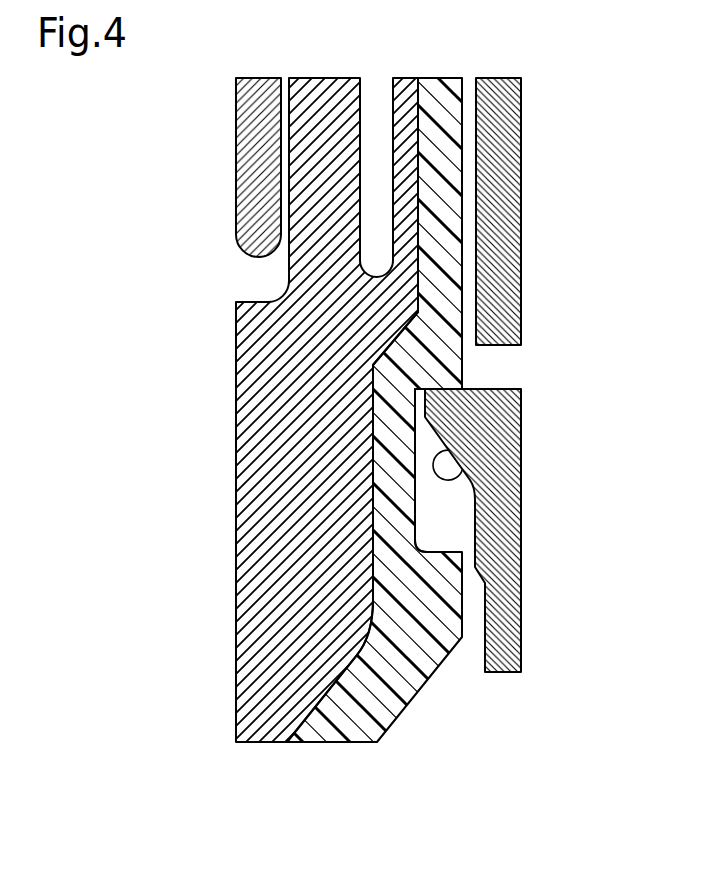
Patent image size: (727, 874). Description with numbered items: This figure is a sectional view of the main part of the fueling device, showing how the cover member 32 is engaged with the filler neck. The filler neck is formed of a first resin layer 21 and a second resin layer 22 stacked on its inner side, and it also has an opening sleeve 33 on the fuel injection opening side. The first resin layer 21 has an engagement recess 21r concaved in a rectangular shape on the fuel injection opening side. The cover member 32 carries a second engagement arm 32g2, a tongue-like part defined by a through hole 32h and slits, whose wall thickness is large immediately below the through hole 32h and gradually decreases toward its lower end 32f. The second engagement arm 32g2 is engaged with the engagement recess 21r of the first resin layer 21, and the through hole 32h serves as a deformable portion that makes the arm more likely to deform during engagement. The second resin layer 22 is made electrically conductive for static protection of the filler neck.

The first resin layer 21 is at (420, 692).
The engagement recess 21r is at (445, 521).
The second resin layer 22 is at (237, 673).
The cover member 32 is at (506, 148).
The lower end 32f is at (519, 585).
The second engagement arm 32g2 is at (462, 481).
The through hole 32h is at (498, 367).
The opening sleeve 33 is at (236, 145).